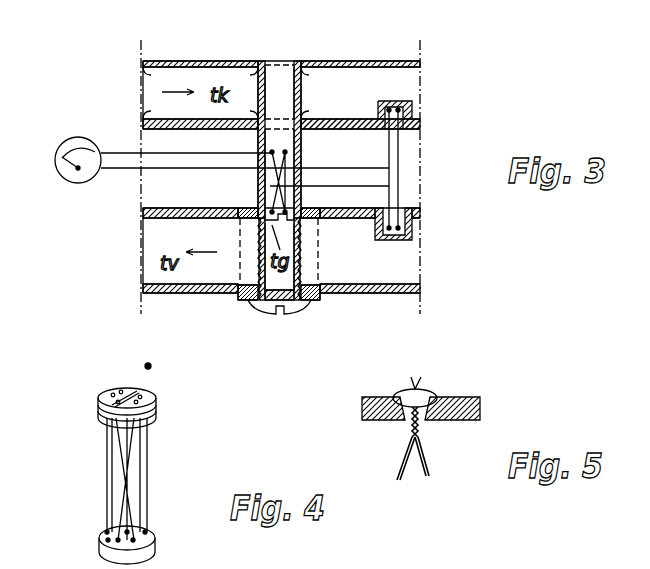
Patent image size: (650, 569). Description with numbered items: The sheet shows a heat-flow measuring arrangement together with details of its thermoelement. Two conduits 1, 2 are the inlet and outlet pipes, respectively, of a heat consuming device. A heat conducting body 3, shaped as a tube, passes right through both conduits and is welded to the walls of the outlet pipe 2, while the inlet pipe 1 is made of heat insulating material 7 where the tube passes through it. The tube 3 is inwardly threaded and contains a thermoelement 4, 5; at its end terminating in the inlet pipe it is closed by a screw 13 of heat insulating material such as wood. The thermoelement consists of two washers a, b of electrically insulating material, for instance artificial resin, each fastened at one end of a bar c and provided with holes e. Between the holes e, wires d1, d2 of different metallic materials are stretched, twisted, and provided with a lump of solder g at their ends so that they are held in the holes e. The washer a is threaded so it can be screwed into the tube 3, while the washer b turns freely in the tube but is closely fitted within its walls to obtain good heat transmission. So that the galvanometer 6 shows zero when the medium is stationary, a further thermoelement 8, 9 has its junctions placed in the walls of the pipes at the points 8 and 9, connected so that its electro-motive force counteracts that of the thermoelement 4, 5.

In FIG. 3, the conduit 1 is at (375, 293).
In FIG. 3, the conduit 2 is at (350, 60).
In FIG. 3, the heat conducting body 3 is at (305, 156).
In FIG. 3, the thermoelement 4 is at (305, 209).
In FIG. 3, the thermoelement 5 is at (256, 167).
In FIG. 3, the galvanometer 6 is at (62, 177).
In FIG. 3, the heat insulating material 7 is at (245, 300).
In FIG. 3, the thermoelement junction point 8 is at (396, 182).
In FIG. 3, the thermoelement junction point 9 is at (390, 100).
In FIG. 3, the screw 13 is at (293, 307).
In FIG. 4, the washer a is at (150, 395).
In FIG. 5, the washer a is at (467, 396).
In FIG. 4, the washer b is at (155, 541).
In FIG. 4, the bar c is at (135, 486).
In FIG. 4, the wire d1 is at (147, 448).
In FIG. 5, the wire d1 is at (425, 466).
In FIG. 4, the wire d2 is at (108, 470).
In FIG. 5, the wire d2 is at (400, 460).
In FIG. 4, the hole e is at (128, 398).
In FIG. 5, the hole e is at (421, 420).
In FIG. 5, the lump of solder g is at (432, 391).